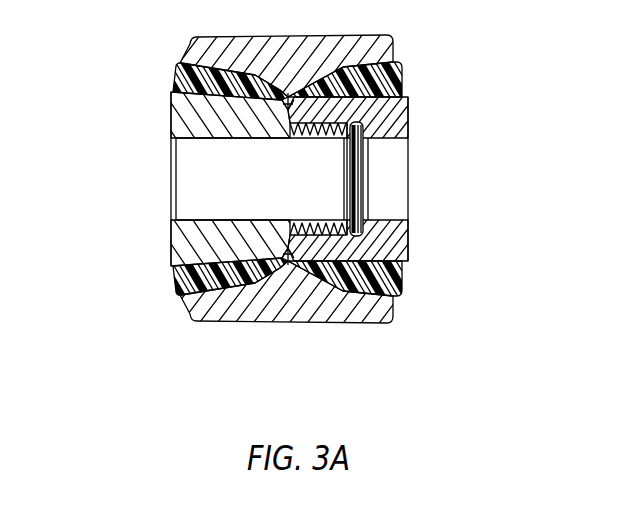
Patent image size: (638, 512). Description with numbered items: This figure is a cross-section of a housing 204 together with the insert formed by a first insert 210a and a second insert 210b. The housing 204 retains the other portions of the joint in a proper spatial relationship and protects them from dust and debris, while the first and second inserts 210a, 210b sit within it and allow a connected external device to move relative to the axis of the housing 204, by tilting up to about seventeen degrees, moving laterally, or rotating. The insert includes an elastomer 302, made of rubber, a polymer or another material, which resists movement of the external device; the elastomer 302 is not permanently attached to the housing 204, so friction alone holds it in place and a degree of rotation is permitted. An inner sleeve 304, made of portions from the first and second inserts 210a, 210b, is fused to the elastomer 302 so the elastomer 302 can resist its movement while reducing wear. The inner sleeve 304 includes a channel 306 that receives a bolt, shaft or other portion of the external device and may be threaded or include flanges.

The housing 204 is at (340, 55).
The elastomer 302 is at (400, 84).
The inner sleeve 304 is at (378, 253).
The first insert 210a is at (400, 126).
The second insert 210b is at (198, 120).
The channel 306 is at (212, 195).